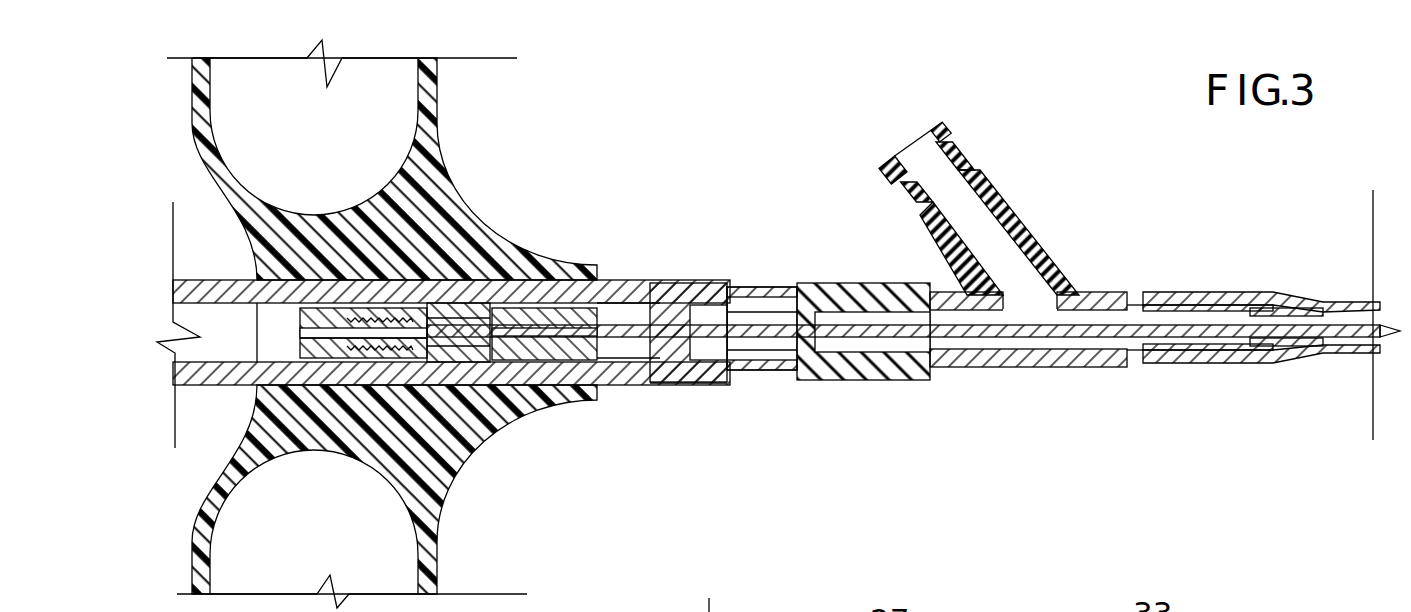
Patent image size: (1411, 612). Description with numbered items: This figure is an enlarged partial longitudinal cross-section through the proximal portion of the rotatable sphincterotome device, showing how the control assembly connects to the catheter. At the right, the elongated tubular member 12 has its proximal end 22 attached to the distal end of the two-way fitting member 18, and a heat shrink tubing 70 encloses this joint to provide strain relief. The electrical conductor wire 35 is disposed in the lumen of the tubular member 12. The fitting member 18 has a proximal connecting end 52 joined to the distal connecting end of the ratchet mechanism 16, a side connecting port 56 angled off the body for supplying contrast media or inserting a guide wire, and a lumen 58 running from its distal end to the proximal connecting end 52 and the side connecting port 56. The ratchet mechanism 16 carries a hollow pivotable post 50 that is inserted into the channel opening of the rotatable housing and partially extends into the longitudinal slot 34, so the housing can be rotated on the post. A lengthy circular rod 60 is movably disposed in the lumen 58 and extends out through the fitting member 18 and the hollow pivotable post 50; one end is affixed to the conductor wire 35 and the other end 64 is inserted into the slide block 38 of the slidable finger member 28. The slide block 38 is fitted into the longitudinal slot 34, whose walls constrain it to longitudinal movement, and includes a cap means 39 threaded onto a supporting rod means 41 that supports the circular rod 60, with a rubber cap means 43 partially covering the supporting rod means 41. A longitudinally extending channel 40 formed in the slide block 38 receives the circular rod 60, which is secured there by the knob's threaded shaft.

The elongated tubular member 12 is at (1343, 297).
The ratchet mechanism 16 is at (836, 380).
The two-way fitting member 18 is at (1066, 367).
The proximal end 22 is at (1277, 363).
The slidable finger member 28 is at (440, 126).
The longitudinal slot 34 is at (640, 386).
The electrical conductor wire 35 is at (1383, 337).
The slide block 38 is at (458, 350).
The cap means 39 is at (302, 340).
The longitudinally extending channel 40 is at (460, 310).
The supporting rod means 41 is at (570, 347).
The rubber cap means 43 is at (558, 322).
The hollow pivotable post 50 is at (758, 283).
The proximal connecting end 52 is at (640, 281).
The side connecting port 56 is at (953, 143).
The lumen 58 is at (1050, 322).
The circular rod 60 is at (1003, 335).
The other end of circular rod 64 is at (392, 347).
The heat shrink tubing 70 is at (1218, 367).